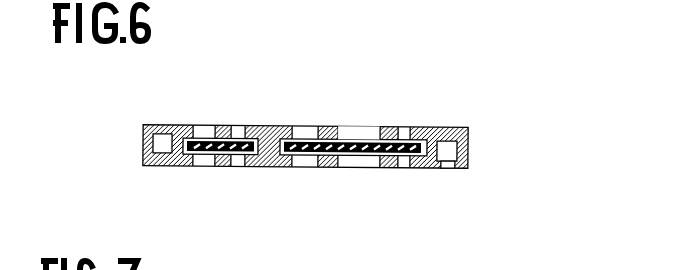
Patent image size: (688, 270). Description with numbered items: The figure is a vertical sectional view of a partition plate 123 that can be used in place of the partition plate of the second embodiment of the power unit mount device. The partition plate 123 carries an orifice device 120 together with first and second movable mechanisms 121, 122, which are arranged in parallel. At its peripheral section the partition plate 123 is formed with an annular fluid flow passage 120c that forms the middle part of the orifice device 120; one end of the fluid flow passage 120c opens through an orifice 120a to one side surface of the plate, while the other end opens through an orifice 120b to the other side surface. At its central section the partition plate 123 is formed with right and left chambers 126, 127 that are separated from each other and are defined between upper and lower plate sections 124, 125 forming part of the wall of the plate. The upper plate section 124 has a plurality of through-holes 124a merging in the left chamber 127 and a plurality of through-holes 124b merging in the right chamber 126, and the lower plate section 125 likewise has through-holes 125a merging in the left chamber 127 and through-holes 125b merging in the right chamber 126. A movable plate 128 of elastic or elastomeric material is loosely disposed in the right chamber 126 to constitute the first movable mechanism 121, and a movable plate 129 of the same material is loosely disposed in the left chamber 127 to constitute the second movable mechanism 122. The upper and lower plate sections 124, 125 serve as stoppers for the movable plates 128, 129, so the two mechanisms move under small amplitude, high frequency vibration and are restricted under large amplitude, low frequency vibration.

The orifice device 120 is at (462, 174).
The orifice 120a is at (163, 125).
The orifice 120b is at (450, 168).
The annular fluid flow passage 120c is at (458, 127).
The first movable mechanism 121 is at (354, 179).
The second movable mechanism 122 is at (229, 176).
The partition plate 123 is at (268, 116).
The upper plate section 124 is at (331, 127).
The through-holes 124a is at (242, 125).
The through-holes 124b is at (360, 127).
The lower plate section 125 is at (388, 167).
The through-holes 125a is at (205, 166).
The through-holes 125b is at (303, 166).
The right chamber 126 is at (407, 168).
The left chamber 127 is at (248, 166).
The movable plate 128 is at (407, 127).
The movable plate 129 is at (195, 166).